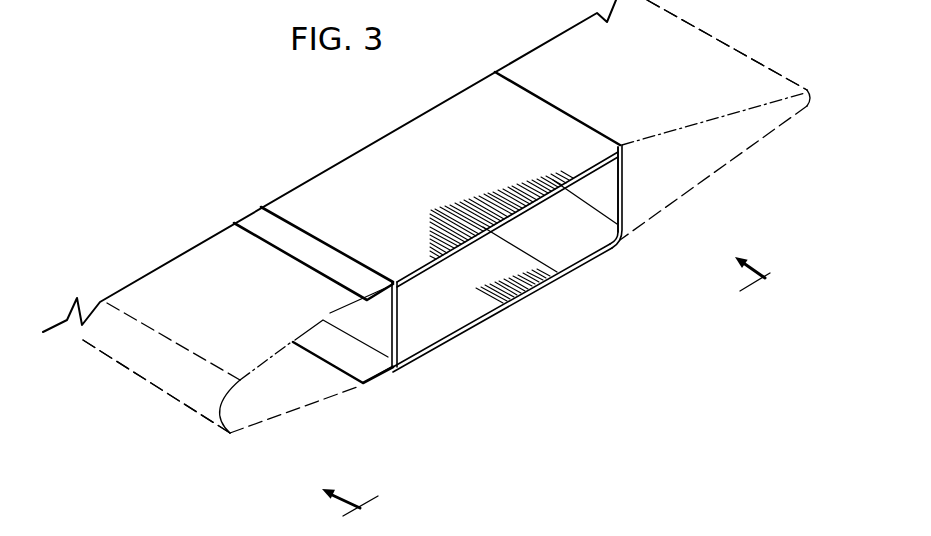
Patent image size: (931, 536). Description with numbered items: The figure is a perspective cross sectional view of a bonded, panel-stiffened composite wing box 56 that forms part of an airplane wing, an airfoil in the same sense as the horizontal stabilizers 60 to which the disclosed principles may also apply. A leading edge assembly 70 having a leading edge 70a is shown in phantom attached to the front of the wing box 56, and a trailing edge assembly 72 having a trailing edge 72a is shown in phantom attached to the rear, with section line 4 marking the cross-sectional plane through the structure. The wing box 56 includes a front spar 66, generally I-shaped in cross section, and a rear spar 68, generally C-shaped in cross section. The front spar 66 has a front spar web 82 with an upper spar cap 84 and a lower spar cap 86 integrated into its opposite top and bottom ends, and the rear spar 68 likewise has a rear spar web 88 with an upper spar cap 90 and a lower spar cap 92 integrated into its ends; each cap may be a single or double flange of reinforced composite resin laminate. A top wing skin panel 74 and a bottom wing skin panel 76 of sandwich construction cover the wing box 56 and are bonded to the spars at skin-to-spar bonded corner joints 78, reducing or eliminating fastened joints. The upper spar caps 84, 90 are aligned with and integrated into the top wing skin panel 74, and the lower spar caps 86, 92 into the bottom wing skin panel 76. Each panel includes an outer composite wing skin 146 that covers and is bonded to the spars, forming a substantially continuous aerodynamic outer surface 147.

The section line 4- 4 is at (536, 377).
The wing box 56 is at (597, 90).
The horizontal stabilizers 60 is at (548, 102).
The front spar 66 is at (398, 250).
The rear spar 68 is at (640, 222).
The leading edge assembly 70 is at (262, 450).
The leading edge 70a is at (124, 385).
The trailing edge assembly 72 is at (745, 182).
The trailing edge 72a is at (730, 33).
The top wing skin panel 74 is at (400, 126).
The bottom wing skin panel 76 is at (464, 265).
The skin-to-spar bonded corner joints 78 is at (625, 126).
The front spar web 82 is at (410, 320).
The upper spar cap 84 is at (365, 298).
The lower spar cap 86 is at (397, 367).
The rear spar web 88 is at (624, 182).
The upper spar cap 90 is at (600, 160).
The lower spar cap 92 is at (606, 250).
The outer composite wing skin 146 is at (457, 93).
The aerodynamic outer surface 147 is at (345, 158).